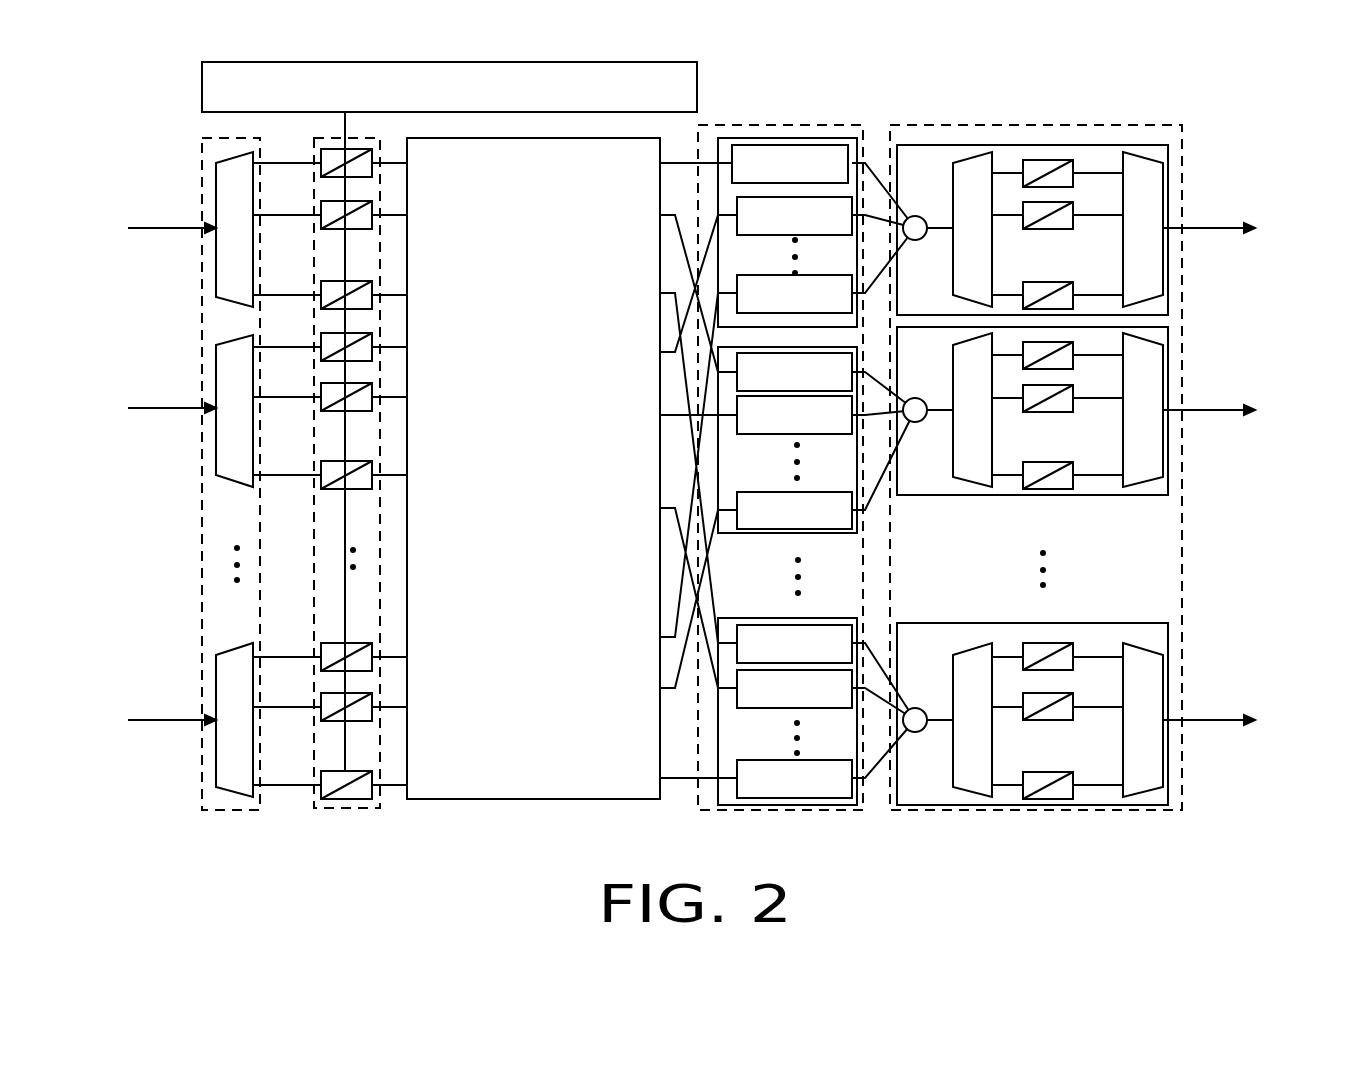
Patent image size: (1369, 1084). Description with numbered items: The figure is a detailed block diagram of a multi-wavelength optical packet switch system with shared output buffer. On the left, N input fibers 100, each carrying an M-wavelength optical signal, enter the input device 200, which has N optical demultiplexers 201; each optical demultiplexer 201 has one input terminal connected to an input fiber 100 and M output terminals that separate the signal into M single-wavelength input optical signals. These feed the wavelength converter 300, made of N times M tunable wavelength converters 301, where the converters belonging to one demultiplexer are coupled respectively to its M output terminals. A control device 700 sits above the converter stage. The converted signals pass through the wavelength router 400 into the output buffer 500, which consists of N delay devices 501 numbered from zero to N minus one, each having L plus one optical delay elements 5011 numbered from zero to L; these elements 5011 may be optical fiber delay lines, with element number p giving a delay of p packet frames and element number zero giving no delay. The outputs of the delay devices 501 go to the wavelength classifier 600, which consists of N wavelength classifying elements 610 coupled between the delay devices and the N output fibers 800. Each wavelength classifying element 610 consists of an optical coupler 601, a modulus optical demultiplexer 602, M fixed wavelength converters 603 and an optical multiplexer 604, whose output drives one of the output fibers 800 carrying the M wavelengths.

The input fiber 100 is at (205, 228).
The input device 200 is at (237, 810).
The optical demultiplexer 201 is at (222, 160).
The wavelength converter 300 is at (347, 808).
The tunable wavelength converter 301 is at (357, 797).
The wavelength router 400 is at (528, 800).
The output buffer 500 is at (783, 810).
The delay device 501 is at (788, 138).
The optical delay element 5011 is at (752, 533).
The wavelength classifier 600 is at (1032, 810).
The optical coupler 601 is at (915, 216).
The modulus optical demultiplexer 602 is at (985, 152).
The fixed wavelength converter 603 is at (1043, 160).
The optical multiplexer 604 is at (1147, 152).
The wavelength classifying element 610 is at (970, 145).
The control device 700 is at (202, 88).
The output fiber 800 is at (1188, 228).